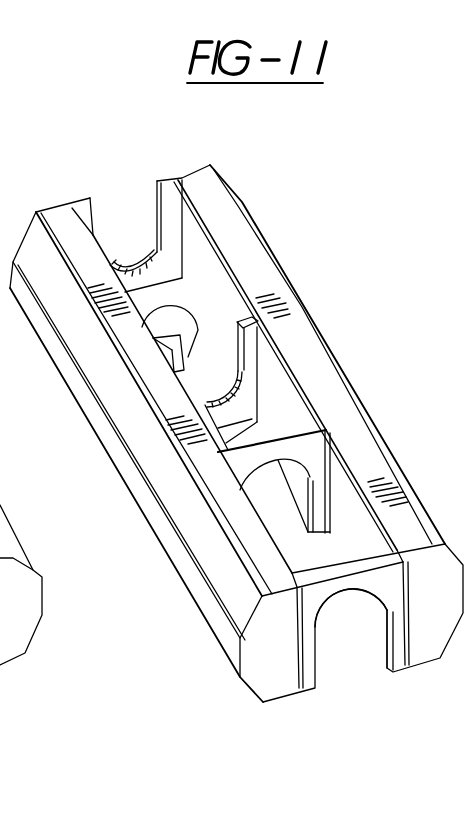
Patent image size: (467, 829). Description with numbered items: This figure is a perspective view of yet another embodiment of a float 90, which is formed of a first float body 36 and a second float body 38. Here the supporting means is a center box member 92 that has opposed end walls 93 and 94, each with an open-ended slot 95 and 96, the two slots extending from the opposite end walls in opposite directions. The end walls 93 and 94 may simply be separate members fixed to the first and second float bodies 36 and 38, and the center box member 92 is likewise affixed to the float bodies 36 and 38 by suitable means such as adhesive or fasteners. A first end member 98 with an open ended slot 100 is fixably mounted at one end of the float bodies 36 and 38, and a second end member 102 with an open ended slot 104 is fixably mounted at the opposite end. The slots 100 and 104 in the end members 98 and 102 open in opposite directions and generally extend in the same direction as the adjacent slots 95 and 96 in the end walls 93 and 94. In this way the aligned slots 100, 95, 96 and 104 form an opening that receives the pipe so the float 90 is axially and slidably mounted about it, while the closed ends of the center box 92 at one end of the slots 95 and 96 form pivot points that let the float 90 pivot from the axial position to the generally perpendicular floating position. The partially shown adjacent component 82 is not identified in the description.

The first float body 36 is at (327, 410).
The second float body 38 is at (191, 500).
The adjacent component 82 is at (0, 725).
The float 90 is at (367, 363).
The center box member 92 is at (285, 355).
The end wall 93 is at (320, 453).
The end wall 94 is at (252, 318).
The open-ended slot 95 is at (295, 505).
The open-ended slot 96 is at (142, 327).
The first end member 98 is at (400, 610).
The open ended slot 100 is at (318, 638).
The second end member 102 is at (172, 208).
The open ended slot 104 is at (147, 252).